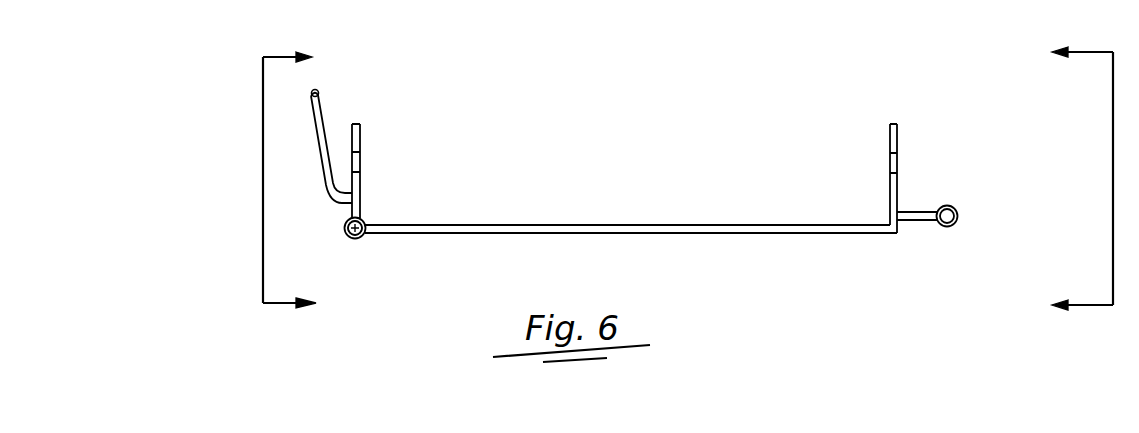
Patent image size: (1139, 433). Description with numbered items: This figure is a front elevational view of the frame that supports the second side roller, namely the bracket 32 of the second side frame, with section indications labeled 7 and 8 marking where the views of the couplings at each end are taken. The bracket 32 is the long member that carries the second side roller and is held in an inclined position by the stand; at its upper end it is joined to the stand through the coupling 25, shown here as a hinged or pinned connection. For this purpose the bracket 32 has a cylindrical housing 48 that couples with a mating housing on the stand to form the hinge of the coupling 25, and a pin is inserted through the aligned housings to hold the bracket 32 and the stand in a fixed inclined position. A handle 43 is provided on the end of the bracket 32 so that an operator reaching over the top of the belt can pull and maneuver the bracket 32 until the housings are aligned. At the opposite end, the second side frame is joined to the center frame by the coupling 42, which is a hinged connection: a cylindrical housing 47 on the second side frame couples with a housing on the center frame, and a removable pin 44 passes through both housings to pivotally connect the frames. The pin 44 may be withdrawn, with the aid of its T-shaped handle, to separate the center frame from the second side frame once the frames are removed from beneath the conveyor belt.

The section line 7- 7 is at (302, 183).
The section line 8- 8 is at (1068, 177).
The coupling 25 is at (362, 216).
The bracket 32 is at (891, 124).
The coupling 42 is at (945, 206).
The handle 43 is at (318, 118).
The pin 44 is at (943, 225).
The cylindrical housing 47 is at (957, 212).
The cylindrical housing 48 is at (363, 237).